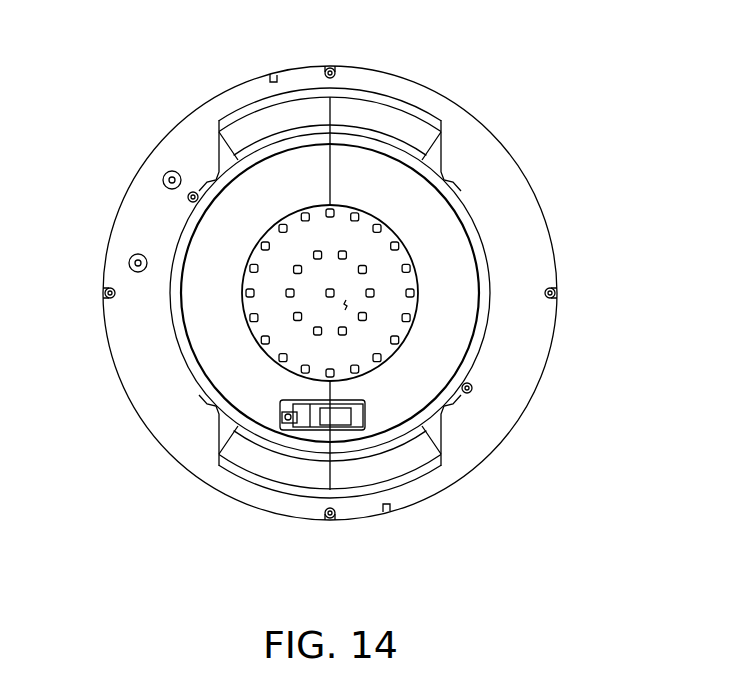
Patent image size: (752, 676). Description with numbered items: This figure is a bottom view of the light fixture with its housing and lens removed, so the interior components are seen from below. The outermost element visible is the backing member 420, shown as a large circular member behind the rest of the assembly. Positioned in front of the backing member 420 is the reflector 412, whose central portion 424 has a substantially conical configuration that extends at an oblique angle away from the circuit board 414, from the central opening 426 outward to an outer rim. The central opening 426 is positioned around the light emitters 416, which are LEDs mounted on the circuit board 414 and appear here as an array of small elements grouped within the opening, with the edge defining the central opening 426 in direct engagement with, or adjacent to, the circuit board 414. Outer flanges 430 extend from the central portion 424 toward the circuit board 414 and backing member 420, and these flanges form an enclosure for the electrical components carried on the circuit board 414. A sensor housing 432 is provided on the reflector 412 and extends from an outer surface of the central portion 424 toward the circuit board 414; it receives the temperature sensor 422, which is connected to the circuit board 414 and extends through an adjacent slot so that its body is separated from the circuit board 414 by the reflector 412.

The reflector 412 is at (477, 233).
The circuit board 414 is at (272, 322).
The light emitters 416 is at (368, 270).
The backing member 420 is at (136, 180).
The temperature sensor 422 is at (368, 432).
The central portion 424 is at (445, 330).
The central opening 426 is at (243, 275).
The outer flanges 430 is at (258, 120).
The sensor housing 432 is at (288, 431).